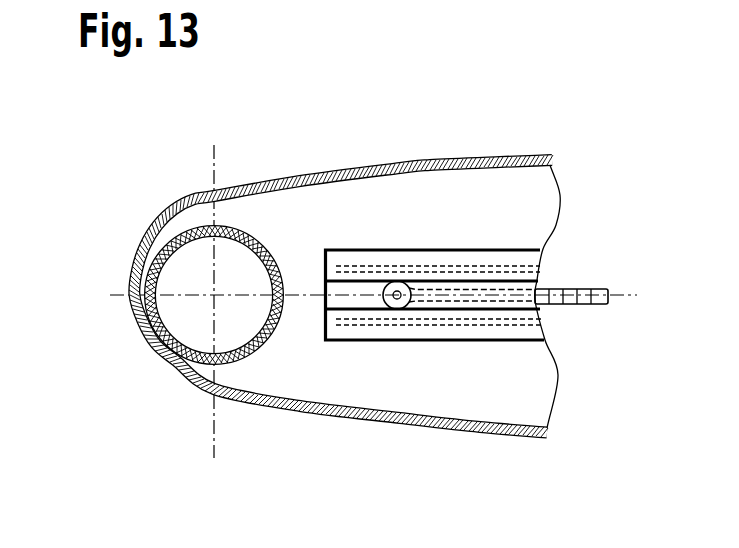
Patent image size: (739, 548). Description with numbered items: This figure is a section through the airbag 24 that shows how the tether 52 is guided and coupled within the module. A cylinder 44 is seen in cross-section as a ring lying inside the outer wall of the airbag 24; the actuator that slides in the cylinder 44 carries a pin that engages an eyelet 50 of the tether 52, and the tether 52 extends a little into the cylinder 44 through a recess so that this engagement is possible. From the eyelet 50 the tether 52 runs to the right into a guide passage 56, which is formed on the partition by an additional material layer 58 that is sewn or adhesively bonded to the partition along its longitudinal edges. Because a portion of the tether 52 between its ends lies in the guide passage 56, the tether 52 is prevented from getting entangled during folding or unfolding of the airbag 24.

The airbag 24 is at (456, 153).
The cylinder 44 is at (198, 226).
The eyelet 50 is at (400, 310).
The tether 52 is at (592, 288).
The guide passage 56 is at (513, 310).
The additional material layer 58 is at (512, 262).